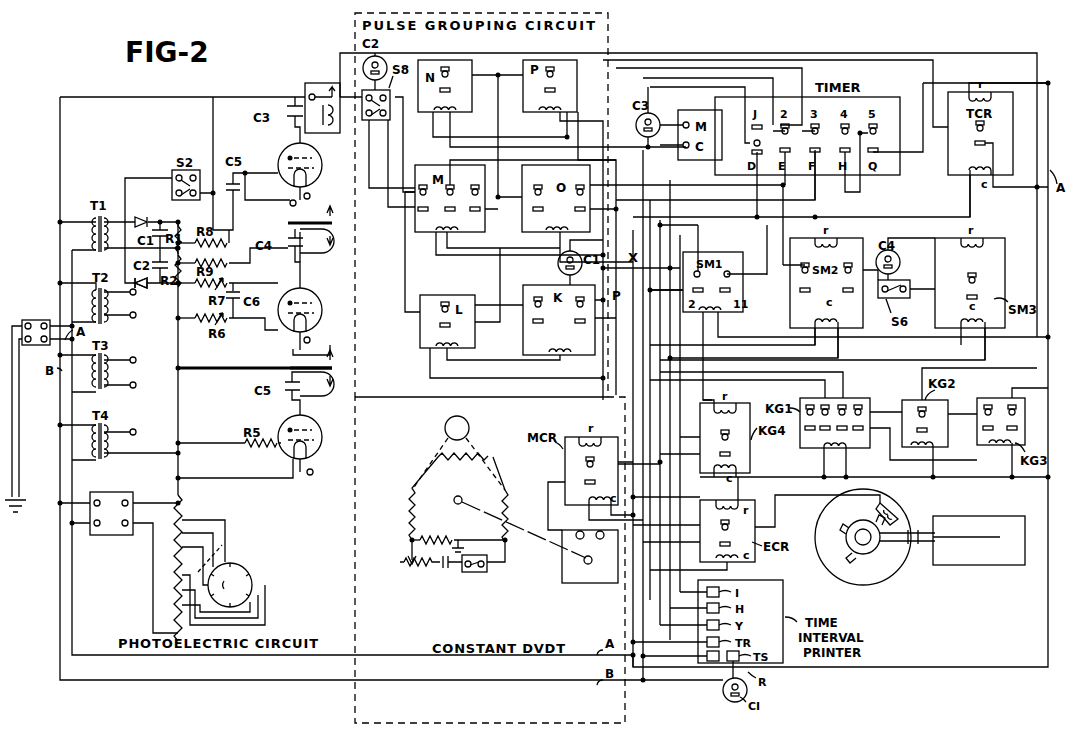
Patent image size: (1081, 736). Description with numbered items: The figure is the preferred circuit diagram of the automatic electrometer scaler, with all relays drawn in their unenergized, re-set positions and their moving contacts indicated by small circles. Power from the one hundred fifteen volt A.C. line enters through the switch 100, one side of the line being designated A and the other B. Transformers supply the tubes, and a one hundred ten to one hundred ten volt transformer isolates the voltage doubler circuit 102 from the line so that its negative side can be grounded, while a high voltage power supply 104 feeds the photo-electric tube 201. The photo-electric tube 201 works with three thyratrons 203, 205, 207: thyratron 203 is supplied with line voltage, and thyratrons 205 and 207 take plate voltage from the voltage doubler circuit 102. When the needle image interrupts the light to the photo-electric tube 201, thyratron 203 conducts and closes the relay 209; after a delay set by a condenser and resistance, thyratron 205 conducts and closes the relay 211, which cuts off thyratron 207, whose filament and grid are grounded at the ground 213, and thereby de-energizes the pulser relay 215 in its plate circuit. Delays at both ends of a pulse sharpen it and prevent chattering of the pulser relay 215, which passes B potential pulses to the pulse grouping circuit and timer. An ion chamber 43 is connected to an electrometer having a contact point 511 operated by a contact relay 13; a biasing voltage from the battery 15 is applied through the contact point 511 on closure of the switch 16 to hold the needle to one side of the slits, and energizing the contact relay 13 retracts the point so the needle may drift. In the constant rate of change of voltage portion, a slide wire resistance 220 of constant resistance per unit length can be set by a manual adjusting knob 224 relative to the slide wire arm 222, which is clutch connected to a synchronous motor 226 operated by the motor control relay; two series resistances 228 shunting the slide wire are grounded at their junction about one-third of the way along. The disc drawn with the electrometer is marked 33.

The switch 100 is at (35, 320).
The voltage doubler circuit 102 is at (174, 212).
The high voltage power supply 104 is at (112, 538).
The photo-electric tube 201 is at (253, 576).
The thyratron 203 is at (314, 437).
The thyratron 205 is at (314, 310).
The thyratron 207 is at (314, 165).
The relay 209 is at (342, 376).
The relay 211 is at (321, 232).
The ground 213 is at (153, 294).
The pulser relay 215 is at (301, 86).
The slide wire resistance 220 is at (410, 499).
The slide wire arm 222 is at (441, 462).
The manual adjusting knob 224 is at (466, 426).
The synchronous motor 226 is at (563, 583).
The two resistances in series 228 is at (449, 535).
The battery 15 is at (448, 570).
The switch 16 is at (483, 573).
The contact relay 13 is at (896, 509).
The contact point 511 is at (902, 528).
The disc 33 is at (888, 578).
The ion chamber 43 is at (1015, 565).